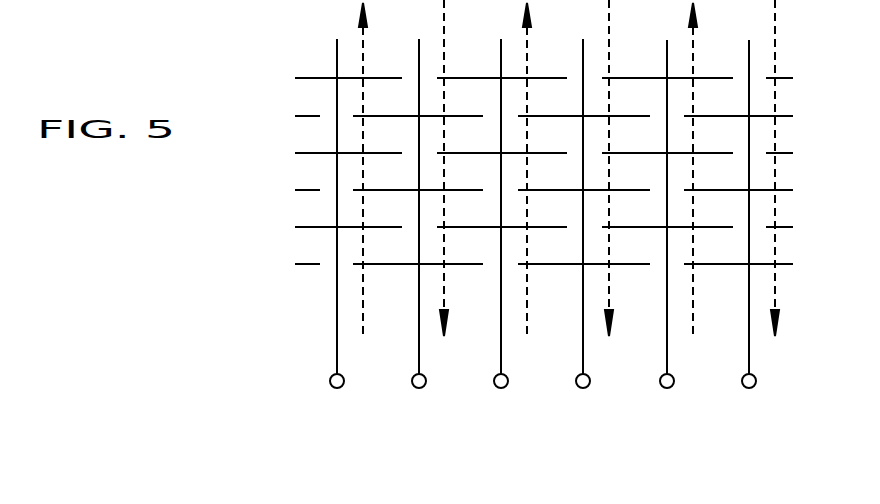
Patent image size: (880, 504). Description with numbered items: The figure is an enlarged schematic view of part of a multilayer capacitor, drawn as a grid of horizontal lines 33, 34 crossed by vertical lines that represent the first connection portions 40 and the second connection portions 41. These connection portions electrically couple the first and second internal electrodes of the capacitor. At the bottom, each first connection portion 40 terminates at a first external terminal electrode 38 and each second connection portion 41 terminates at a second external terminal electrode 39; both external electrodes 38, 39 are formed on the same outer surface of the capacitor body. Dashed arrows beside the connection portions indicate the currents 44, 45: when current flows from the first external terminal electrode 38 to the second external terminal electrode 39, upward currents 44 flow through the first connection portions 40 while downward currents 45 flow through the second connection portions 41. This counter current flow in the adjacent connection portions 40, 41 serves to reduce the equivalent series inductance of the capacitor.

The first row line 33 is at (793, 78).
The second row line 34 is at (793, 116).
The first external terminal electrode 38 is at (337, 389).
The second external terminal electrode 39 is at (419, 389).
The first connection portion 40 is at (337, 62).
The second connection portion 41 is at (419, 62).
The current 44 is at (360, 58).
The current 45 is at (443, 58).